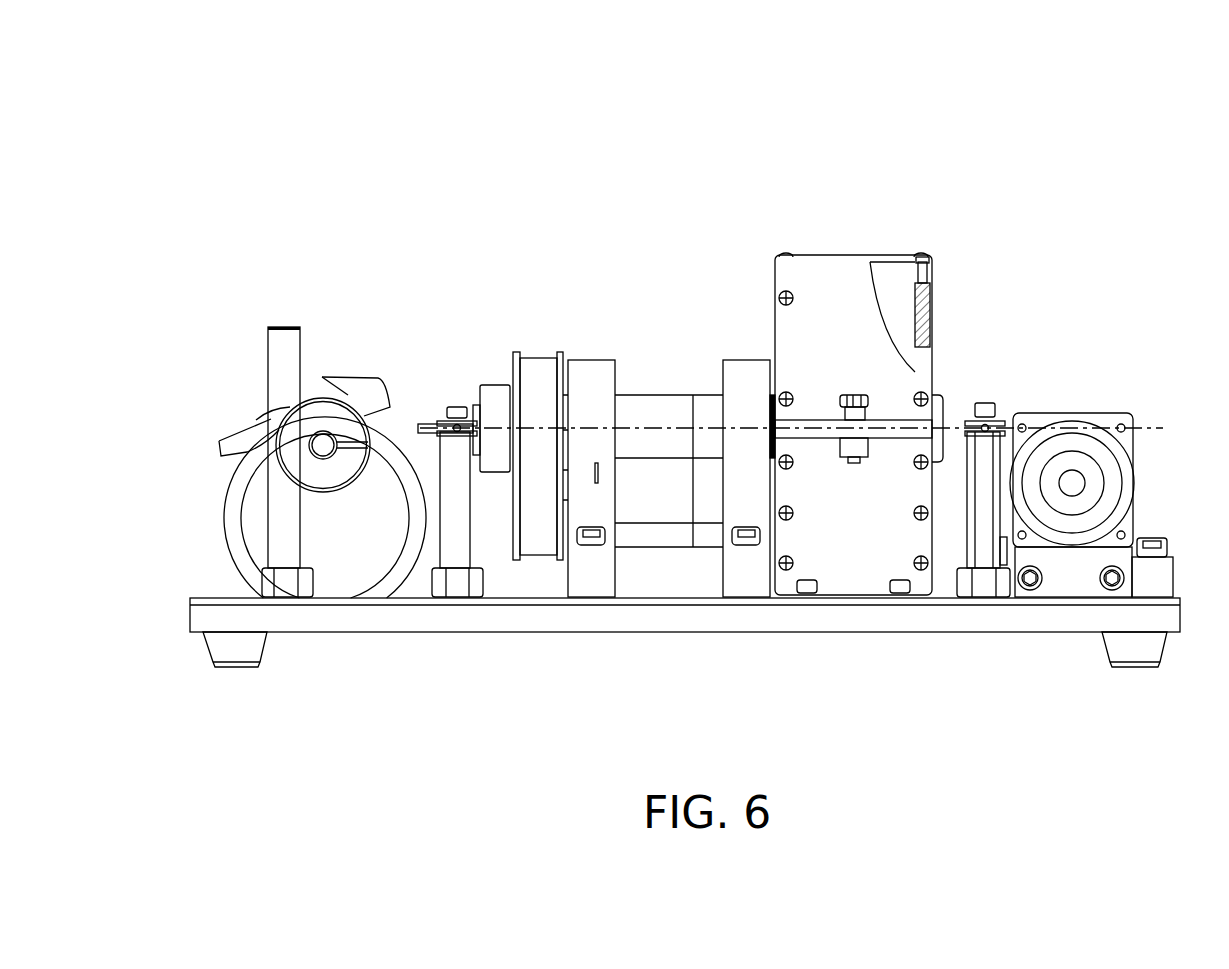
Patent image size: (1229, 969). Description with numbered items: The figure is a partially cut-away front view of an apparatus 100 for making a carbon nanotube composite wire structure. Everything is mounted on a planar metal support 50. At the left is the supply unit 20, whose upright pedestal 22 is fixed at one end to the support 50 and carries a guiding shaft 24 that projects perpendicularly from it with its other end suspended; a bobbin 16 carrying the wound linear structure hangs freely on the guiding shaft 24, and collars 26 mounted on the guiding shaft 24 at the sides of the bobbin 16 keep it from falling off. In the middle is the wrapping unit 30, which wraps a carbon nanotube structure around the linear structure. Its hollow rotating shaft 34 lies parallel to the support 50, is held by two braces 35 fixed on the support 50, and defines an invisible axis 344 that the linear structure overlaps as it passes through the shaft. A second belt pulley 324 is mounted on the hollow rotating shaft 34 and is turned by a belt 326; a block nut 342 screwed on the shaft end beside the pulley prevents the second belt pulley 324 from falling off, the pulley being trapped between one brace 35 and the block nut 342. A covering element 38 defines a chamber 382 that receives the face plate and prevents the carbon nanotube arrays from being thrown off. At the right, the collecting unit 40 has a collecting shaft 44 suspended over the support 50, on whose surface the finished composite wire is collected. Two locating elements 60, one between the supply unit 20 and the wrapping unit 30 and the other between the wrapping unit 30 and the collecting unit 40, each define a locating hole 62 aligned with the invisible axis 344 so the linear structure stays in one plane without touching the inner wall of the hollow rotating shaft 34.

The apparatus 100 is at (680, 178).
The bobbin 16 is at (237, 550).
The supply unit 20 is at (281, 429).
The pedestal 22 is at (278, 362).
The guiding shaft 24 is at (325, 438).
The collars 26 is at (302, 467).
The wrapping unit 30 is at (604, 496).
The second belt pulley 324 is at (515, 370).
The belt 326 is at (537, 372).
The hollow rotating shaft 34 is at (672, 405).
The block nut 342 is at (483, 470).
The invisible axis 344 is at (693, 420).
The braces 35 is at (595, 480).
The covering element 38 is at (882, 391).
The chamber 382 is at (893, 278).
The collecting unit 40 is at (1106, 478).
The collecting shaft 44 is at (1105, 462).
The support 50 is at (1000, 617).
The locating elements 60 is at (450, 390).
The locating holes 62 is at (448, 417).